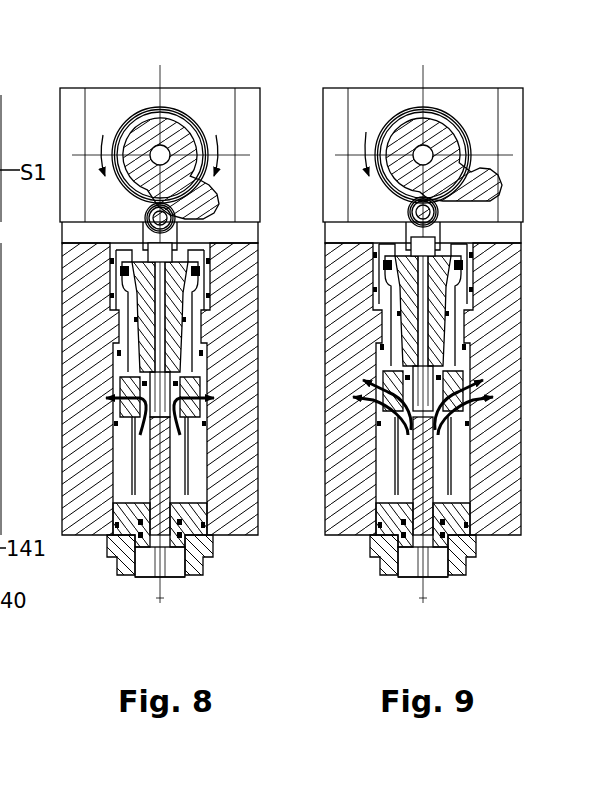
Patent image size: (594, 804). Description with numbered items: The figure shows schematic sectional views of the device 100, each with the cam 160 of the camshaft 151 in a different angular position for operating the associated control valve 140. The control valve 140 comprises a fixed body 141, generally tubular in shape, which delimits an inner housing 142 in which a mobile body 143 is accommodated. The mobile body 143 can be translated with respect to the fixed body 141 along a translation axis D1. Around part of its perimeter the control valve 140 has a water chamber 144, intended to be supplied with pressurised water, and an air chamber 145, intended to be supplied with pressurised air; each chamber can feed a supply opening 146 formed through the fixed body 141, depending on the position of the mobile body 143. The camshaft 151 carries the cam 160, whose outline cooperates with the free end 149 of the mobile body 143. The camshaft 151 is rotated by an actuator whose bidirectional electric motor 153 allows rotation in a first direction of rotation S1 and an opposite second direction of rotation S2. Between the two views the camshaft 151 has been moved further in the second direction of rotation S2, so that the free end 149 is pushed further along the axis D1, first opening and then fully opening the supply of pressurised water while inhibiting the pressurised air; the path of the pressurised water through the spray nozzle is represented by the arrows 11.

In FIG. 8, the device 100 is at (73, 66).
In FIG. 9, the device 100 is at (396, 309).
In FIG. 8, the electric motor 153 is at (100, 88).
In FIG. 9, the electric motor 153 is at (423, 112).
In FIG. 8, the cam 160 is at (145, 125).
In FIG. 9, the cam 160 is at (438, 127).
In FIG. 8, the camshaft 151 is at (166, 150).
In FIG. 9, the camshaft 151 is at (444, 111).
In FIG. 8, the second direction of rotation S2 is at (102, 142).
In FIG. 9, the second direction of rotation S2 is at (326, 151).
In FIG. 8, the first direction of rotation S1 is at (218, 172).
In FIG. 8, the free end 149 is at (140, 233).
In FIG. 9, the free end 149 is at (356, 223).
In FIG. 8, the air chamber 145 is at (127, 330).
In FIG. 9, the air chamber 145 is at (372, 369).
In FIG. 8, the supply opening 146 is at (120, 387).
In FIG. 9, the supply opening 146 is at (426, 349).
In FIG. 8, the arrows 11 is at (108, 404).
In FIG. 9, the arrows 11 is at (423, 407).
In FIG. 8, the water chamber 144 is at (118, 468).
In FIG. 9, the water chamber 144 is at (395, 389).
In FIG. 8, the mobile body 143 is at (148, 566).
In FIG. 9, the mobile body 143 is at (416, 523).
In FIG. 8, the fixed body 141 is at (212, 538).
In FIG. 9, the fixed body 141 is at (470, 555).
In FIG. 8, the inner housing 142 is at (175, 563).
In FIG. 9, the inner housing 142 is at (445, 596).
In FIG. 8, the control valve 140 is at (206, 585).
In FIG. 9, the control valve 140 is at (475, 588).
In FIG. 8, the translation axis D1 is at (180, 588).
In FIG. 9, the translation axis D1 is at (433, 624).